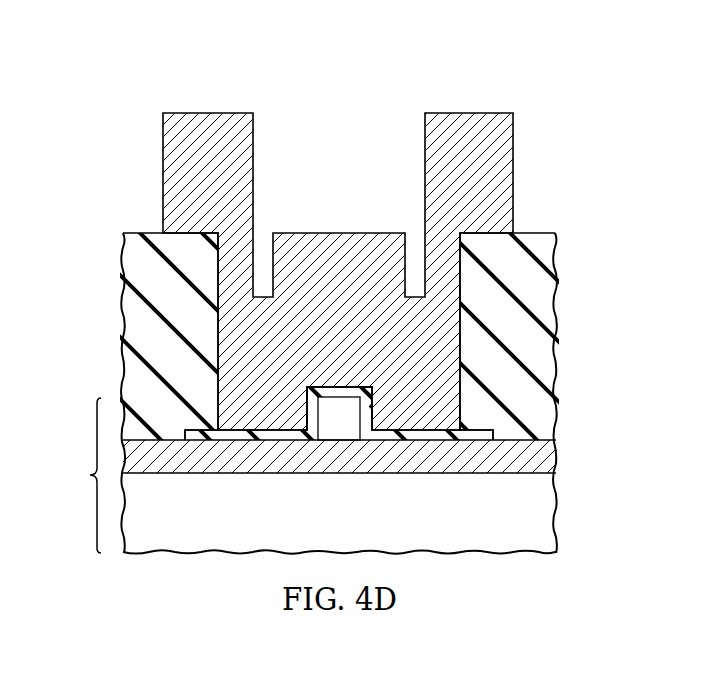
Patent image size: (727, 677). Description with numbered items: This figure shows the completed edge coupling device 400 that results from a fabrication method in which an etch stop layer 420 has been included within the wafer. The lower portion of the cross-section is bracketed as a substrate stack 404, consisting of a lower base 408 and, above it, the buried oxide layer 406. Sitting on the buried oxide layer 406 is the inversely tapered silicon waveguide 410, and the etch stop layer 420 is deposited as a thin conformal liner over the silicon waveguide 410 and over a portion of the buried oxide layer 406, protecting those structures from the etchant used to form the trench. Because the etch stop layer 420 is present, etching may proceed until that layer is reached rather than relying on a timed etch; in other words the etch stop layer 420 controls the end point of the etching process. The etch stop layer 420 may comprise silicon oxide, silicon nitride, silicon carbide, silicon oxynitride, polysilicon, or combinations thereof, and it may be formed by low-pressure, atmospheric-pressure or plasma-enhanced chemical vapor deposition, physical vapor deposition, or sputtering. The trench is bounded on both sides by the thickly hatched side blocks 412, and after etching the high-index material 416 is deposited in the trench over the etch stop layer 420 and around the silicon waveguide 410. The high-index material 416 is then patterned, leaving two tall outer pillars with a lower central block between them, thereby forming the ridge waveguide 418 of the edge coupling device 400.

The edge coupling device 400 is at (80, 76).
The substrate stack 404 is at (73, 475).
The buried oxide layer 406 is at (558, 455).
The substrate / semiconductor fin 408 is at (249, 517).
The inversely tapered silicon waveguide 410 is at (330, 391).
The dielectric blocks 412 is at (121, 355).
The high-index material 416 is at (172, 135).
The ridge waveguide 418 is at (328, 172).
The etch stop layer 420 is at (415, 437).